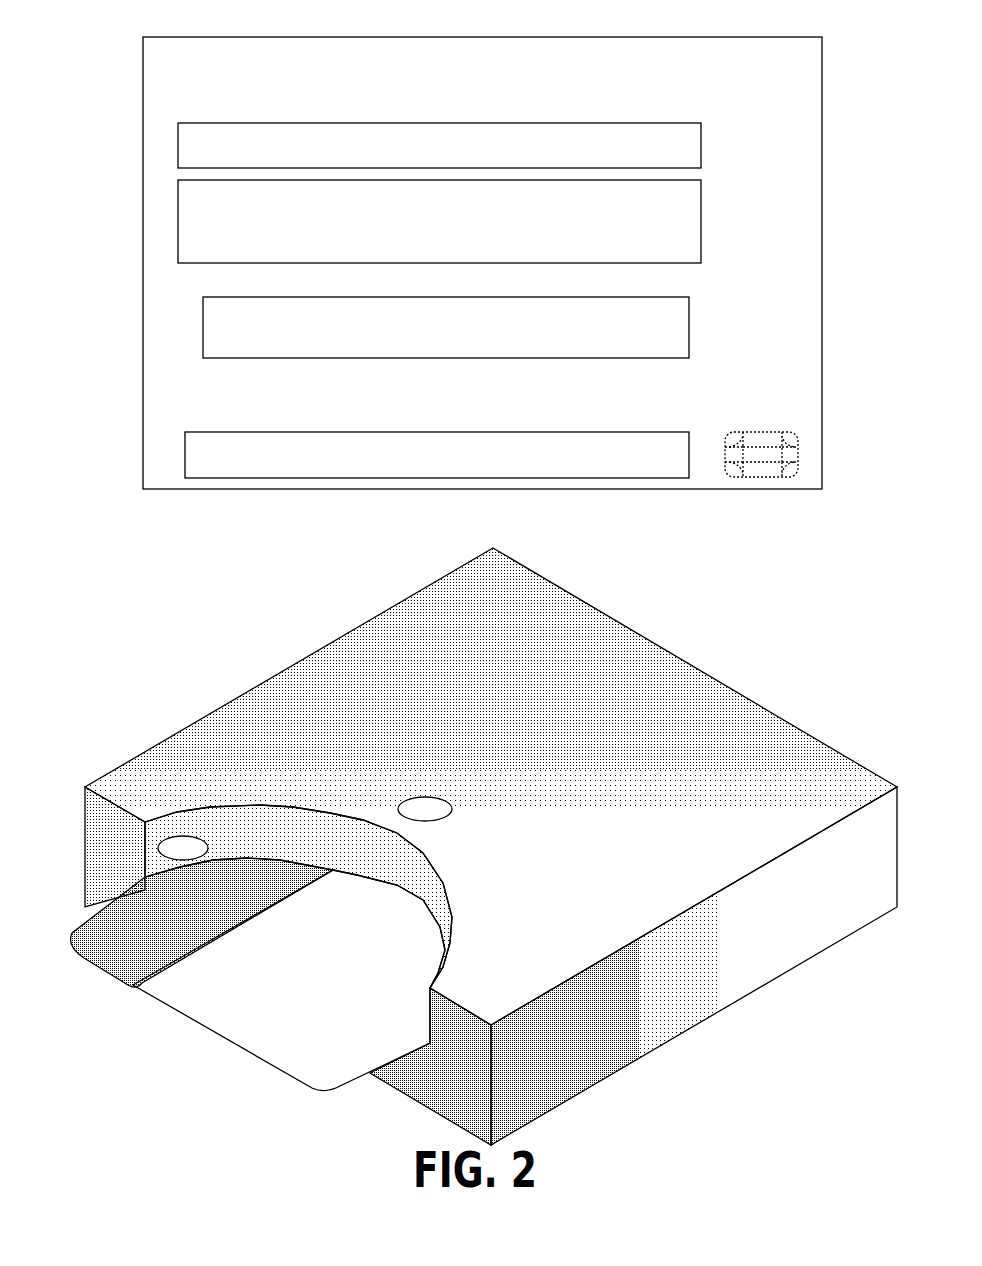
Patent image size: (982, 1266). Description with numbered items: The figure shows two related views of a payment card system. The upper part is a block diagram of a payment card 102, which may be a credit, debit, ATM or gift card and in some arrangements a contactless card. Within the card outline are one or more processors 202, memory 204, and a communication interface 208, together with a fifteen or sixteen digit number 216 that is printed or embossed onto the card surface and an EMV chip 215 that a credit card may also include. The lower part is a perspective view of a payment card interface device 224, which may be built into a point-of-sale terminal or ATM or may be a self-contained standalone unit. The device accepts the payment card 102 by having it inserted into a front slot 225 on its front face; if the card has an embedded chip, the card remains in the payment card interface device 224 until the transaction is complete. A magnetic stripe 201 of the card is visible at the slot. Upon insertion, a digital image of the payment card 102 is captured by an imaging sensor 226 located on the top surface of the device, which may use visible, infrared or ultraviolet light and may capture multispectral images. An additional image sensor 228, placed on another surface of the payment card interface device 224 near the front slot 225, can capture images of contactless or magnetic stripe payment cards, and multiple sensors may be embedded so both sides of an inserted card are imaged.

The payment card 102 is at (181, 64).
The processor 202 is at (178, 145).
The memory 204 is at (188, 214).
The fifteen or sixteen digit number 216 is at (203, 330).
The communication interface 208 is at (185, 470).
The EMV chip 215 is at (798, 457).
The payment card interface device 224 is at (280, 695).
The front slot 225 is at (355, 875).
The imaging sensor 226 is at (428, 798).
The image sensor 228 is at (170, 836).
The magnetic stripe 201 is at (102, 965).